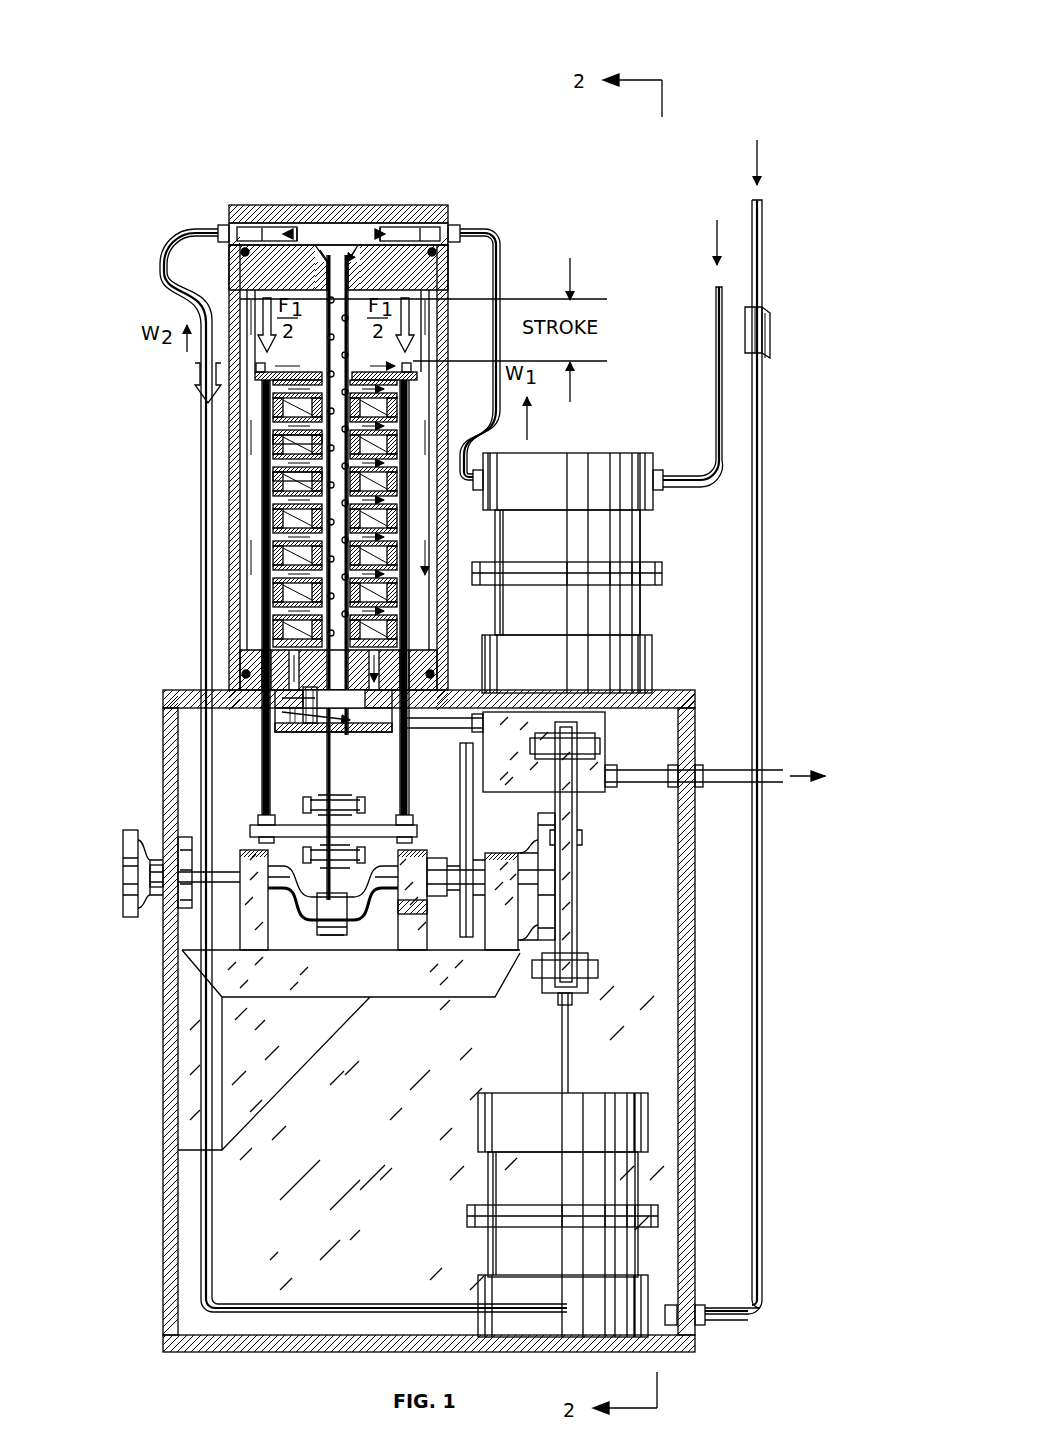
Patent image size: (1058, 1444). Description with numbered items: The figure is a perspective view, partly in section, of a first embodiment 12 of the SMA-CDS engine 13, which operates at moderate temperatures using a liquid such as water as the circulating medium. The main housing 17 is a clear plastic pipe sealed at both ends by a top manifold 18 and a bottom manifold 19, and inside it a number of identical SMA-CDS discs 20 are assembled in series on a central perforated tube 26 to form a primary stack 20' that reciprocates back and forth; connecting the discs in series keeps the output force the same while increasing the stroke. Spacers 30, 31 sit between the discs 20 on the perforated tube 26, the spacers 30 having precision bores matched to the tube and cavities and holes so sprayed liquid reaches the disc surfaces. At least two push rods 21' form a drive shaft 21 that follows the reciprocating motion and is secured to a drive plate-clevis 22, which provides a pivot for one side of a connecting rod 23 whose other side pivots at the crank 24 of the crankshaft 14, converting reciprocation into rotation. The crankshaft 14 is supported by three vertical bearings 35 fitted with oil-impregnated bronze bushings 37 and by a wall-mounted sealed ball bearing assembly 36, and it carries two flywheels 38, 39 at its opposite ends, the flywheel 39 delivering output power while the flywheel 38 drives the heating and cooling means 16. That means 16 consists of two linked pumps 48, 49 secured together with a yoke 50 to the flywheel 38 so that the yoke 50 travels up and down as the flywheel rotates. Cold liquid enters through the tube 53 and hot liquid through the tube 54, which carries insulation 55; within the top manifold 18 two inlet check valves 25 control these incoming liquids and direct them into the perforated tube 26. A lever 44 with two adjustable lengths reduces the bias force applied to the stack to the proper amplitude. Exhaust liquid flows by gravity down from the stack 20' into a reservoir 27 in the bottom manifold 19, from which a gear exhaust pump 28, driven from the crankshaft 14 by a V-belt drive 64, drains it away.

The first embodiment 12 is at (275, 112).
The SMA-CDS engine 13 is at (520, 240).
The crankshaft 14 is at (240, 852).
The heating and cooling means 16 is at (585, 450).
The main housing 17 is at (227, 347).
The top manifold 18 is at (260, 297).
The bottom manifold 19 is at (236, 632).
The SMA-CDS disc 20 is at (259, 513).
The primary stack 20' is at (220, 453).
The drive shaft 21 is at (331, 611).
The push rod 21' is at (341, 723).
The drive plate-clevis 22 is at (367, 823).
The connecting rod 23 is at (328, 935).
The crank 24 is at (289, 925).
The inlet check valve 25 is at (293, 205).
The perforated tube 26 is at (355, 205).
The reservoir 27 is at (333, 709).
The exhaust pump 28 is at (585, 792).
The spacer 30 is at (413, 407).
The spacer 31 is at (282, 495).
The vertical bearing 35 is at (487, 935).
The sealed ball bearing assembly 36 is at (178, 948).
The oil-impregnated bronze bushing 37 is at (413, 848).
The flywheel 38 is at (542, 935).
The flywheel 39 is at (123, 868).
The lever 44 is at (325, 775).
The pump 48 is at (467, 1212).
The pump 49 is at (662, 575).
The yoke 50 is at (573, 925).
The tube 53 is at (715, 352).
The tube 54 is at (762, 285).
The insulation 55 is at (770, 338).
The V-belt drive 64 is at (470, 800).